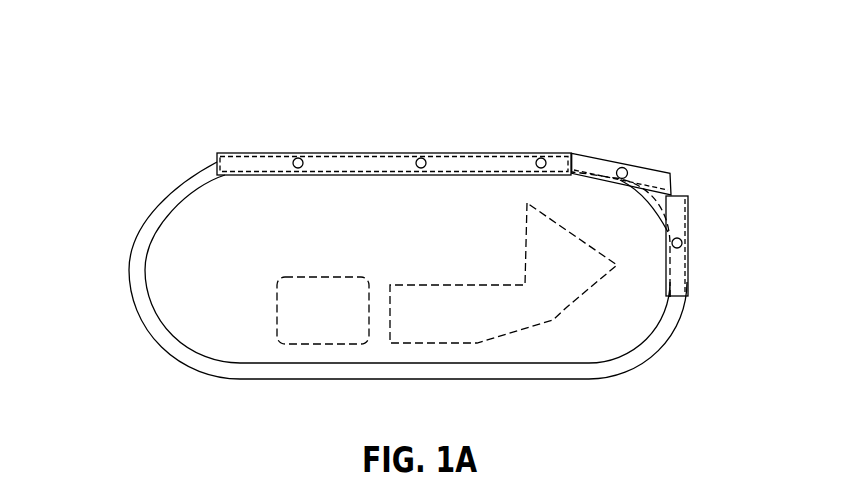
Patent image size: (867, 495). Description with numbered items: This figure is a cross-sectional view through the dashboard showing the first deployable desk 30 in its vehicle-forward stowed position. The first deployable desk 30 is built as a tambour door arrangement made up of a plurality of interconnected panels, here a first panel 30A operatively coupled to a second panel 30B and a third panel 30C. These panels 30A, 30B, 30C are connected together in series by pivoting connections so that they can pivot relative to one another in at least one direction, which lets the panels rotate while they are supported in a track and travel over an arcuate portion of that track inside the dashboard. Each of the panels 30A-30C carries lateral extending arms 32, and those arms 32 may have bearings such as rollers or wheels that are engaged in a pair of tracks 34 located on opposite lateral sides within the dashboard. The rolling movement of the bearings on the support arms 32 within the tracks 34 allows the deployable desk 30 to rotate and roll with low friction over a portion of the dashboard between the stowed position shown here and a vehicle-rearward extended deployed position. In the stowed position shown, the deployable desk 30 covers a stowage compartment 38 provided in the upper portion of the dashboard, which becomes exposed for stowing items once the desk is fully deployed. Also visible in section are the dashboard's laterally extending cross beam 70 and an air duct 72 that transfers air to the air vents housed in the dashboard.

The first deployable desk 30 is at (253, 118).
The first panel 30A is at (228, 153).
The second panel 30B is at (657, 170).
The third panel 30C is at (688, 215).
The lateral extending arms 32 is at (300, 158).
The tracks 34 is at (480, 165).
The stowage compartment 38 is at (187, 257).
The cross beam 70 is at (277, 324).
The air duct 72 is at (570, 308).